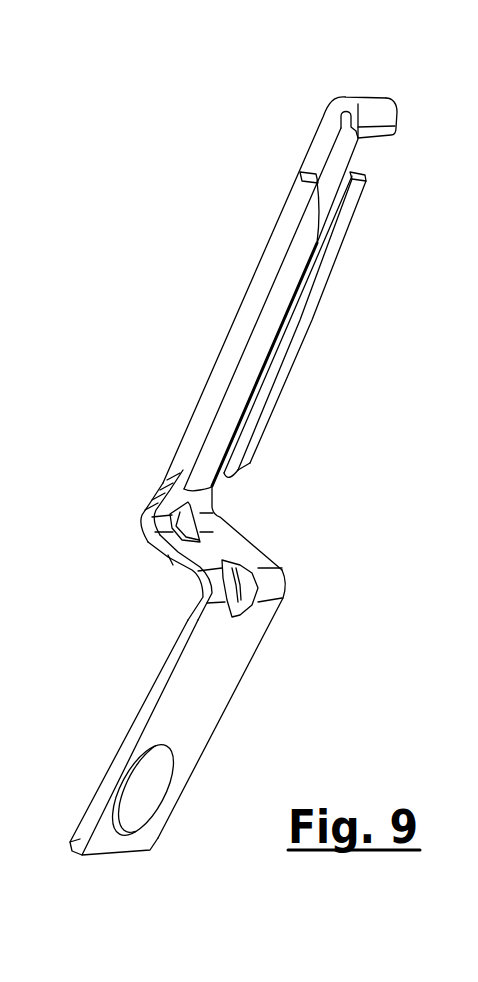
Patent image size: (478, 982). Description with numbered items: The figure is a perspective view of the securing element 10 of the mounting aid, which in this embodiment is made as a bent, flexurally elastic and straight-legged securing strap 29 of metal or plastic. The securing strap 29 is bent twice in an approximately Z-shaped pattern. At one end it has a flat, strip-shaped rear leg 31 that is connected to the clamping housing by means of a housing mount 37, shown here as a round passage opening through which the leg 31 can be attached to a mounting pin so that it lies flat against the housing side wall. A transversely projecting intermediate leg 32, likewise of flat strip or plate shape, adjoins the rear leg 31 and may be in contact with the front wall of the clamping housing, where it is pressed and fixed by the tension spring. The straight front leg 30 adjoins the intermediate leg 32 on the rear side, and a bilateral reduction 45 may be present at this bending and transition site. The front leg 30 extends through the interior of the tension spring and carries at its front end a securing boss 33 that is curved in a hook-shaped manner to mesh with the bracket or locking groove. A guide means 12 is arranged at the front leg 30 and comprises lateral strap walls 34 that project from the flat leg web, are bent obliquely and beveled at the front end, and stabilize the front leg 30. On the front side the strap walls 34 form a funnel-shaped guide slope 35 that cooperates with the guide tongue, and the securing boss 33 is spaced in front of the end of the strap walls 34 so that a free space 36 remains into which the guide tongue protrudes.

The securing element 10 is at (267, 718).
The securing strap 29 is at (227, 703).
The guide means 12 is at (315, 335).
The front leg 30 is at (233, 325).
The rear leg 31 is at (215, 662).
The intermediate leg 32 is at (229, 550).
The securing boss 33 is at (378, 110).
The strap walls 34 is at (303, 240).
The guide slope 35 is at (362, 205).
The free space 36 is at (342, 152).
The housing mount 37 is at (137, 803).
The bilateral reduction 45 is at (155, 483).